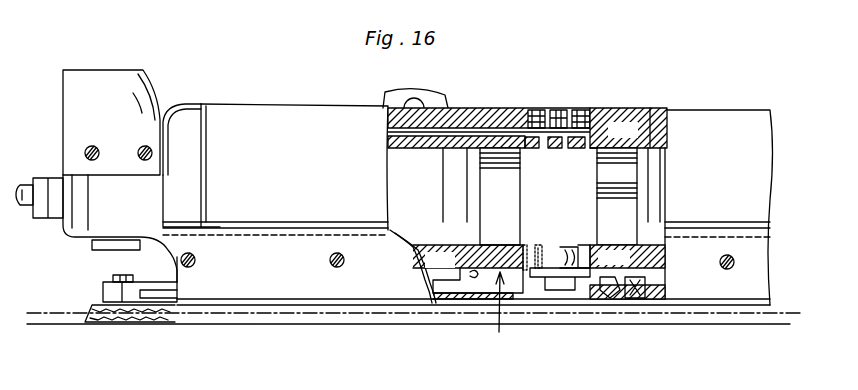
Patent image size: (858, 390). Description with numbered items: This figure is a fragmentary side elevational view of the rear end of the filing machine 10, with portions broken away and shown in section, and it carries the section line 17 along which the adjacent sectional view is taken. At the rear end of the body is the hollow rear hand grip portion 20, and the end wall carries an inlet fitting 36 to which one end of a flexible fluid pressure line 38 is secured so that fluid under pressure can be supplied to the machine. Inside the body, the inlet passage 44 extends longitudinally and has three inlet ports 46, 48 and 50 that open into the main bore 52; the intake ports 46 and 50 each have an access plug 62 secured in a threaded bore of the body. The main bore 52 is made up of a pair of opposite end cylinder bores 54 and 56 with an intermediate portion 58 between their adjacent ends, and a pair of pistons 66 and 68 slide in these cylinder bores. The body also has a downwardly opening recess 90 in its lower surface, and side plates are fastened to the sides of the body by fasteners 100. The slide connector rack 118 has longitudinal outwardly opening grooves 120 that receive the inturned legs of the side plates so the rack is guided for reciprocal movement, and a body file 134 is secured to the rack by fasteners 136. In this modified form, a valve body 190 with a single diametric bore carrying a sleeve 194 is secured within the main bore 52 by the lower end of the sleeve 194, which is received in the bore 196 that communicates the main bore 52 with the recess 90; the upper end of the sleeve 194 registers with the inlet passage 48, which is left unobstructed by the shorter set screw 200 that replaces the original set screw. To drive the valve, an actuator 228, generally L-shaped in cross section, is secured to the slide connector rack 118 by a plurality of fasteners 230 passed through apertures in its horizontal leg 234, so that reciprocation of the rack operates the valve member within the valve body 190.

The filing machine 10 is at (687, 105).
The section line 17- 17 is at (557, 93).
The rear hand grip portion 20 is at (148, 108).
The inlet fitting 36 is at (58, 178).
The flexible fluid pressure line 38 is at (30, 185).
The second inlet passage 44 is at (455, 126).
The inlet port 46 is at (532, 148).
The inlet passage 48 is at (558, 148).
The inlet port 50 is at (595, 148).
The main bore 52 is at (635, 122).
The cylinder bore 54 is at (474, 195).
The cylinder bore 56 is at (481, 196).
The intermediate portion 58 is at (507, 277).
The access plug 62 is at (533, 110).
The piston 66 is at (672, 188).
The piston 68 is at (396, 178).
The recess 90 is at (434, 282).
The fasteners 100 is at (328, 258).
The slide connector rack 118 is at (93, 287).
The grooves 120 is at (175, 262).
The body file 134 is at (89, 315).
The fasteners 136 is at (113, 276).
The valve body 190 is at (628, 196).
The sleeve 194 is at (538, 255).
The bore 196 is at (583, 249).
The set screw 200 is at (562, 112).
The actuator 228 is at (488, 313).
The fasteners 230 is at (662, 277).
The horizontal leg 234 is at (413, 318).